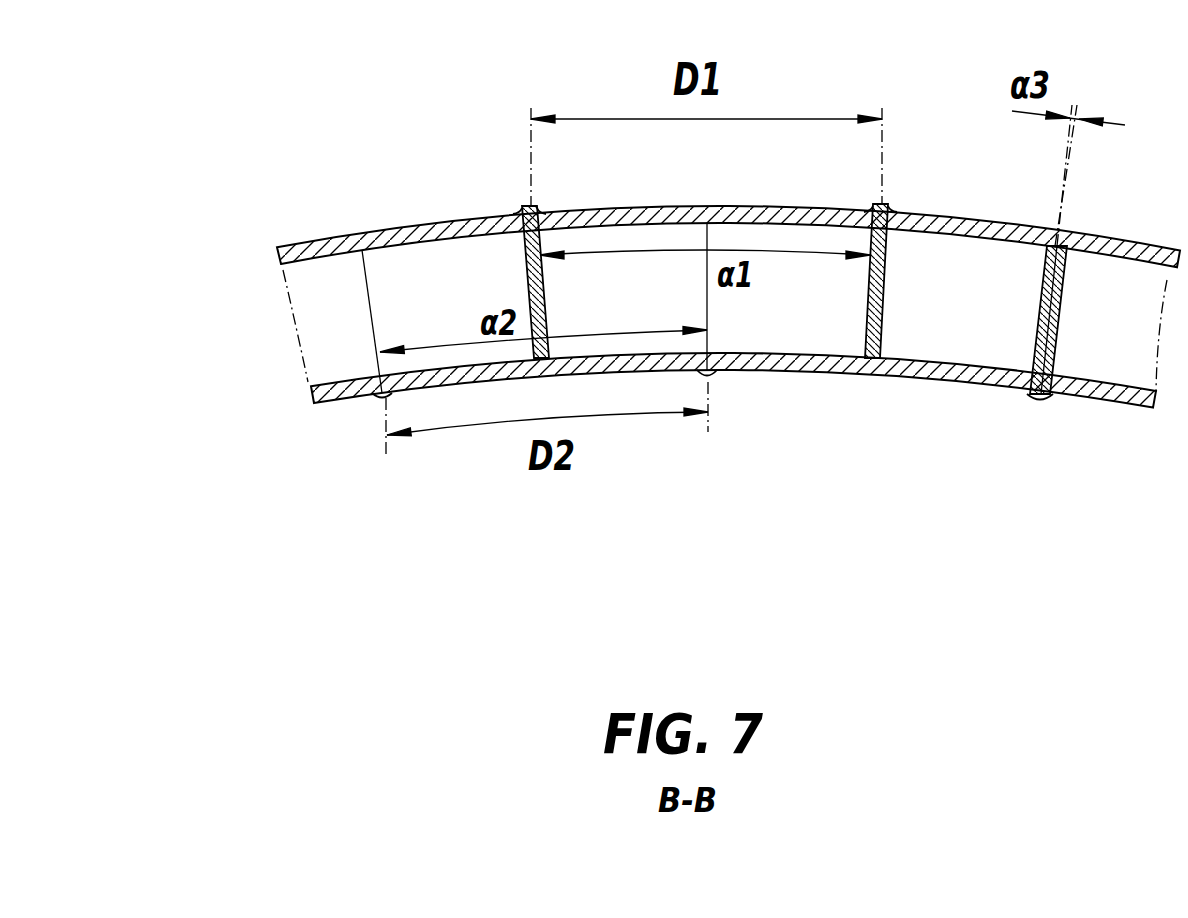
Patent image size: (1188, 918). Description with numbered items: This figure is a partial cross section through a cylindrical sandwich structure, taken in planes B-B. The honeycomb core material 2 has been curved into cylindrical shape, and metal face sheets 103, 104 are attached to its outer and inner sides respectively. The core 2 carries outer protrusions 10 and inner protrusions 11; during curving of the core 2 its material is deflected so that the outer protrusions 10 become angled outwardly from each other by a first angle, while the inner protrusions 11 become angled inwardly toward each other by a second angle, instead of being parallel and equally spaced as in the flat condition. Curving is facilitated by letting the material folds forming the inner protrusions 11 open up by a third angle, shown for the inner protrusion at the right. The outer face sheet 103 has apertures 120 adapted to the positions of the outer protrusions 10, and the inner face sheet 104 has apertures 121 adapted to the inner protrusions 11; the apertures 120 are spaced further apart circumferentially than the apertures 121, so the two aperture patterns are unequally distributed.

The honeycomb core material 2 is at (972, 310).
The outer protrusions 10 is at (522, 206).
The inner protrusions 11 is at (715, 378).
The metal face sheet 103 is at (308, 246).
The metal face sheet 104 is at (333, 398).
The apertures 120 is at (519, 213).
The apertures 121 is at (1053, 395).